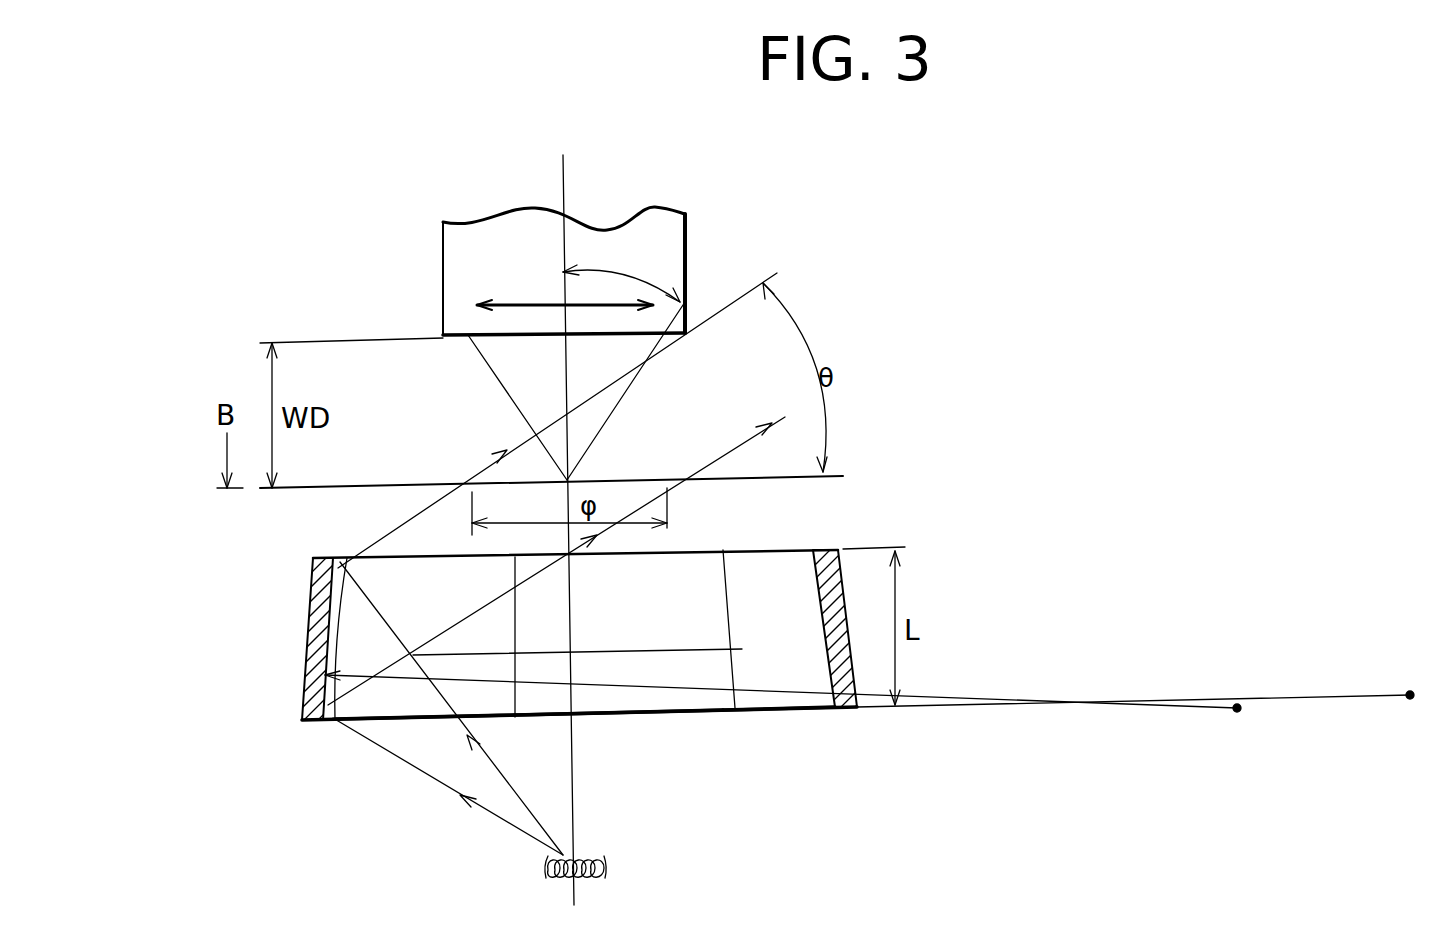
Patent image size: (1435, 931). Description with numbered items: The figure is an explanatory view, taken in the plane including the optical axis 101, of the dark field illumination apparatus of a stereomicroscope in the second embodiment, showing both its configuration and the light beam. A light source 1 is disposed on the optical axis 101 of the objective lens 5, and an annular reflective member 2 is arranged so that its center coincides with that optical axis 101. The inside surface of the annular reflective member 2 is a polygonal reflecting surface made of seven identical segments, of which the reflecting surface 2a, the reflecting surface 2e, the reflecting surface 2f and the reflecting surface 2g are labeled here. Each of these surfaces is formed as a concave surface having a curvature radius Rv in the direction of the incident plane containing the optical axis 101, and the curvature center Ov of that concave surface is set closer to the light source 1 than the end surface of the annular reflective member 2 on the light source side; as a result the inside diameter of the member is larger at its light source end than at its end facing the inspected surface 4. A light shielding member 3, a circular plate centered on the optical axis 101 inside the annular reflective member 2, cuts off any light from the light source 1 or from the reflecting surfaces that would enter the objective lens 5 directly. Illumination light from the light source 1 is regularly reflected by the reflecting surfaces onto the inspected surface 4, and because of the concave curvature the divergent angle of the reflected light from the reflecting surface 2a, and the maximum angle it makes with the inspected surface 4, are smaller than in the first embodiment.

The light source 1 is at (604, 867).
The annular reflective member 2 is at (317, 612).
The reflecting surface 2a is at (333, 720).
The reflecting surface 2e is at (781, 695).
The reflecting surface 2f is at (650, 704).
The reflecting surface 2g is at (483, 700).
The light shielding member 3 is at (700, 649).
The inspected surface 4 is at (833, 472).
The objective lens 5 is at (523, 303).
The optical axis 101 is at (562, 187).
The curvature radius Rv is at (993, 697).
The curvature center Ov is at (1237, 712).